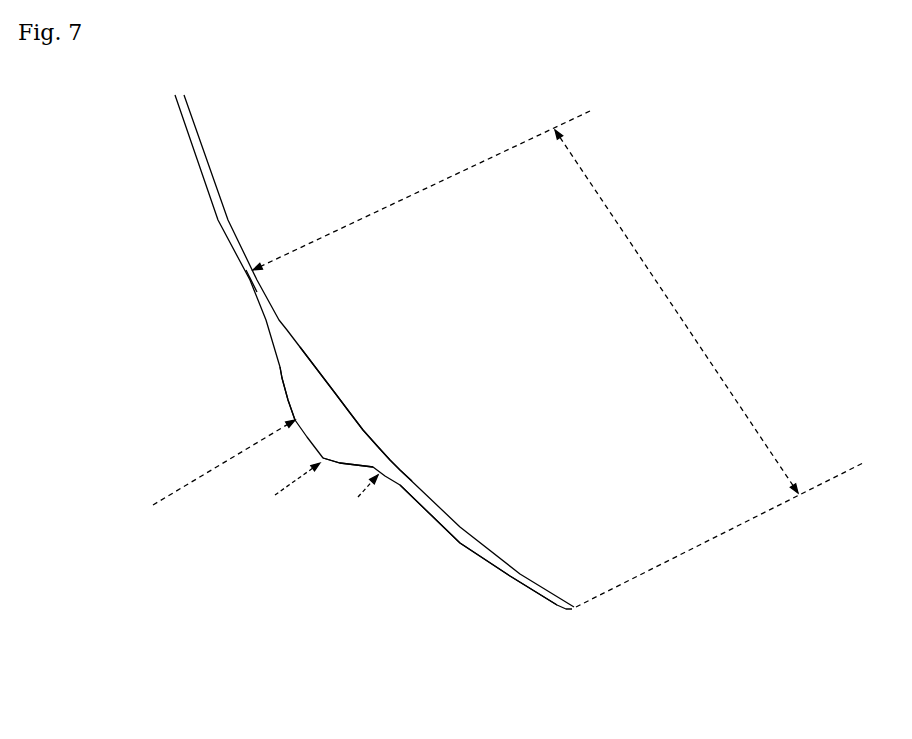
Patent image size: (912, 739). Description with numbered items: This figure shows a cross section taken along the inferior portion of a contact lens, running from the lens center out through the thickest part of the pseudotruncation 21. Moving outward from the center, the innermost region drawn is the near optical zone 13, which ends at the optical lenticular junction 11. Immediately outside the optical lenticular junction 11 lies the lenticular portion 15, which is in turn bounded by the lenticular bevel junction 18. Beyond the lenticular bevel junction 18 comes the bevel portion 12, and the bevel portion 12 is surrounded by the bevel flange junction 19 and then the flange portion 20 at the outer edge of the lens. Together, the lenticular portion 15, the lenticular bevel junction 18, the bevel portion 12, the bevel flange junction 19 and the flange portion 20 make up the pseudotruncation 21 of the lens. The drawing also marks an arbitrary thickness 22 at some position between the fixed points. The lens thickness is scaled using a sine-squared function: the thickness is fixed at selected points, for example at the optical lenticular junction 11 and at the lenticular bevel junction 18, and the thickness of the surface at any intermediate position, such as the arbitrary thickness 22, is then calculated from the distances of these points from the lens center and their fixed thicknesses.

The optical lenticular junction 11 is at (243, 277).
The bevel portion 12 is at (347, 468).
The near optical zone 13 is at (192, 158).
The lenticular portion 15 is at (280, 378).
The lenticular bevel junction 18 is at (363, 430).
The bevel flange junction 19 is at (393, 457).
The flange portion 20 is at (460, 543).
The pseudotruncation 21 is at (508, 359).
The arbitrary thickness position 22 is at (335, 393).